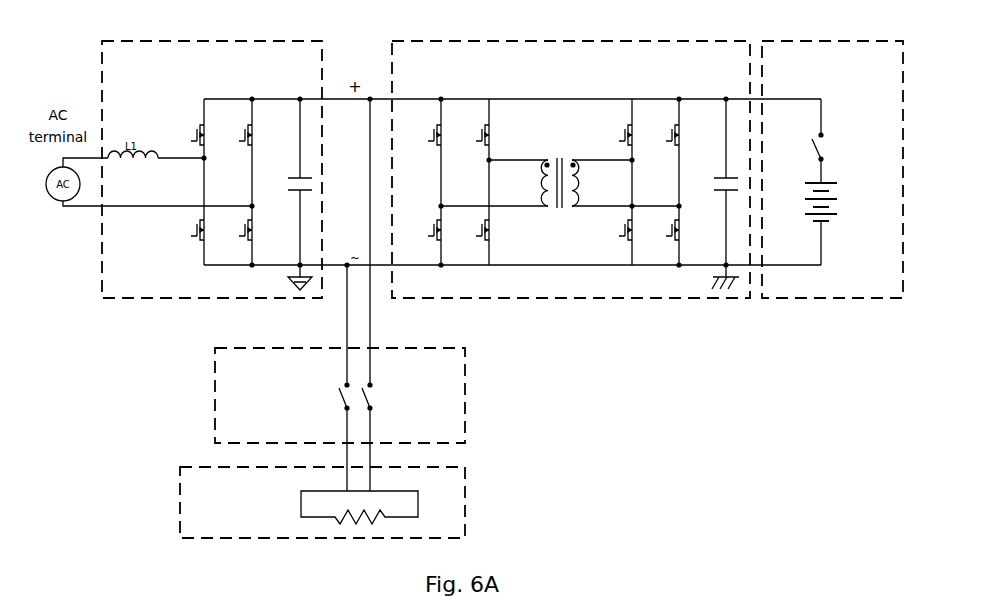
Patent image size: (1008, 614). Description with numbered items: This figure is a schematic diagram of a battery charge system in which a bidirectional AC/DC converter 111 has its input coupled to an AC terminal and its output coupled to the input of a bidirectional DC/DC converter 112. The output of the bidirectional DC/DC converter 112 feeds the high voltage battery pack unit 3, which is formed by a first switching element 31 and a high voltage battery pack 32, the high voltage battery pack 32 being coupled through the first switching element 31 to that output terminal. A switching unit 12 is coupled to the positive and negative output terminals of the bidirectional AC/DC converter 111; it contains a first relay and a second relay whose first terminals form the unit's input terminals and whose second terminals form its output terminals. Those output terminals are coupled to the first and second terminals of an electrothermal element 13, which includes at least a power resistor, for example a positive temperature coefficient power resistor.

The bidirectional AC/DC converter 111 is at (245, 41).
The bidirectional DC/DC converter 112 is at (601, 41).
The high voltage battery pack unit 3 is at (808, 41).
The first switching element 31 is at (835, 150).
The high voltage battery pack 32 is at (840, 204).
The switching unit 12 is at (433, 348).
The electrothermal element 13 is at (470, 485).